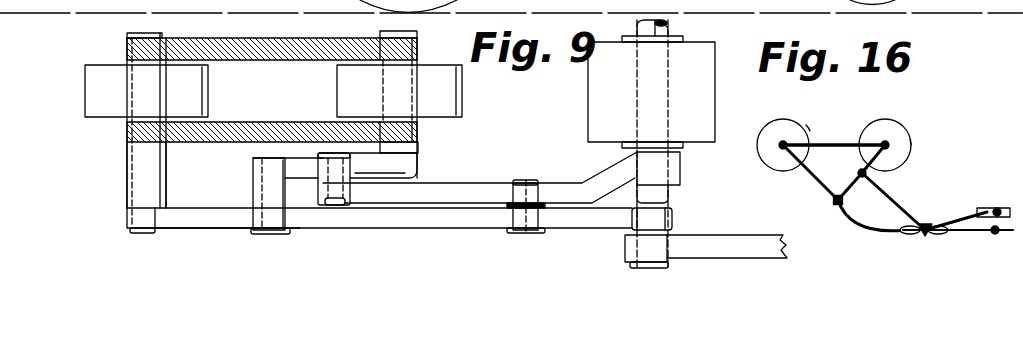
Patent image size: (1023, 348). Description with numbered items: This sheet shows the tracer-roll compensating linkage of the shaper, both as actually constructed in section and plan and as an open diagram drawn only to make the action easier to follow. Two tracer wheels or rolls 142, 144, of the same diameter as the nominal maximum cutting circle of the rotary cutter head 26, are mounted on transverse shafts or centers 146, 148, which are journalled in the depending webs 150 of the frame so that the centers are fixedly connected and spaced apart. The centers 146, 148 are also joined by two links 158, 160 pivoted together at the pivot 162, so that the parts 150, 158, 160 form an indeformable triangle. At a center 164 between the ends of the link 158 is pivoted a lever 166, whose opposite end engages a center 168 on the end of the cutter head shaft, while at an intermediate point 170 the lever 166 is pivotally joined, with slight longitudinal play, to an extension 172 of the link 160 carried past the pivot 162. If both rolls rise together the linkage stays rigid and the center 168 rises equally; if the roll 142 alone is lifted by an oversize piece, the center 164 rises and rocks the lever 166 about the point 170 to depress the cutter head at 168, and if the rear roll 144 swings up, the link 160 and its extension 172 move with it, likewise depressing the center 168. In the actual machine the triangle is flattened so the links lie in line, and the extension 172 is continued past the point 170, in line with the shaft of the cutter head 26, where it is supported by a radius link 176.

In FIG. 9, the rotary cutter head 26 is at (597, 93).
In FIG. 9, the tracer wheel 142 is at (440, 95).
In FIG. 16, the tracer wheel 142 is at (913, 137).
In FIG. 9, the tracer wheel 144 is at (95, 87).
In FIG. 16, the tracer wheel 144 is at (812, 132).
In FIG. 9, the shaft or center 146 is at (388, 33).
In FIG. 16, the shaft or center 146 is at (888, 135).
In FIG. 9, the shaft or center 148 is at (132, 34).
In FIG. 16, the shaft or center 148 is at (790, 133).
In FIG. 9, the depending webs 150 is at (238, 52).
In FIG. 16, the depending webs 150 is at (838, 143).
In FIG. 9, the link 158 is at (300, 163).
In FIG. 16, the link 158 is at (850, 198).
In FIG. 9, the link 160 is at (197, 224).
In FIG. 16, the link 160 is at (808, 172).
In FIG. 9, the pivot 162 is at (275, 234).
In FIG. 16, the pivot 162 is at (832, 203).
In FIG. 9, the center 164 is at (418, 153).
In FIG. 16, the center 164 is at (893, 172).
In FIG. 9, the lever 166 is at (410, 193).
In FIG. 16, the lever 166 is at (887, 200).
In FIG. 9, the center 168 is at (662, 196).
In FIG. 16, the center 168 is at (995, 206).
In FIG. 9, the intermediate point 170 is at (525, 234).
In FIG. 16, the intermediate point 170 is at (923, 236).
In FIG. 9, the extension 172 is at (452, 228).
In FIG. 16, the extension 172 is at (867, 228).
In FIG. 9, the radius link 176 is at (695, 248).
In FIG. 16, the radius link 176 is at (997, 237).